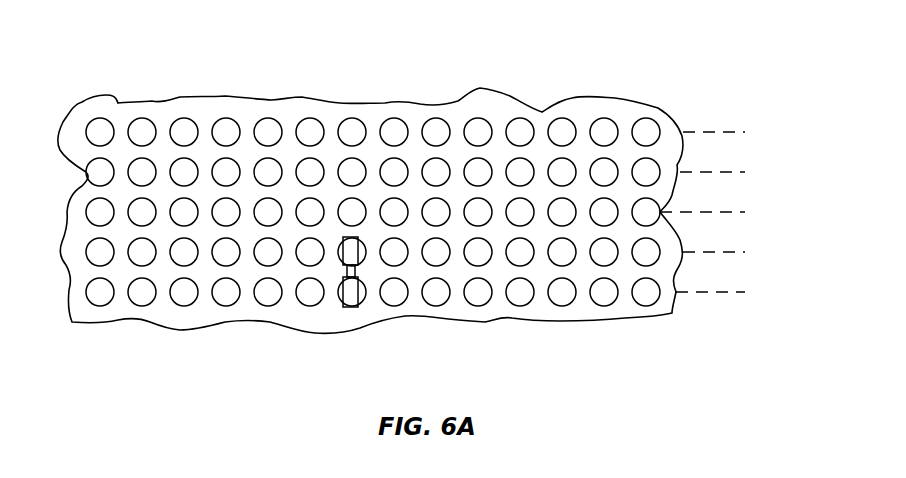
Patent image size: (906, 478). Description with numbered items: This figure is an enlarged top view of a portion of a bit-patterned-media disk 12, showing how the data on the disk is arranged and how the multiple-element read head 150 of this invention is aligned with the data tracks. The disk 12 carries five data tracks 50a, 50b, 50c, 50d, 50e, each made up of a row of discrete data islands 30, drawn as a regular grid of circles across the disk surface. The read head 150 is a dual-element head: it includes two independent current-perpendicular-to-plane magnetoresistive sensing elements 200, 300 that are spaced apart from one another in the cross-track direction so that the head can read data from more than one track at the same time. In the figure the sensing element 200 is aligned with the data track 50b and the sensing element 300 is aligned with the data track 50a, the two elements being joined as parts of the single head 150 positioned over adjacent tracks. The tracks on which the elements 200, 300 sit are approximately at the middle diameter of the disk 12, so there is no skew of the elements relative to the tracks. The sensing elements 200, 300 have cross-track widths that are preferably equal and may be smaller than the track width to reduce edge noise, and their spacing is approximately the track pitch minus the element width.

The disk 12 is at (148, 36).
The data islands 30 is at (268, 118).
The data track 50a is at (725, 292).
The data track 50b is at (725, 252).
The data track 50c is at (725, 212).
The data track 50d is at (725, 172).
The data track 50e is at (725, 132).
The read head 150 is at (349, 272).
The sensing element 200 is at (352, 250).
The sensing element 300 is at (352, 300).